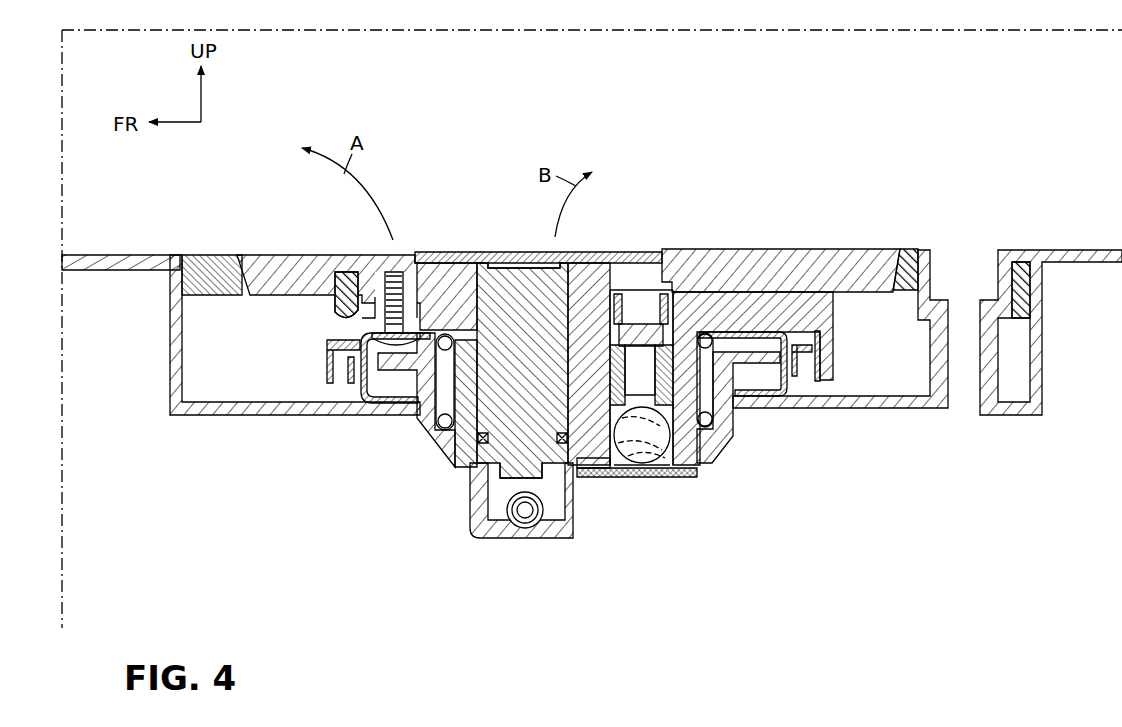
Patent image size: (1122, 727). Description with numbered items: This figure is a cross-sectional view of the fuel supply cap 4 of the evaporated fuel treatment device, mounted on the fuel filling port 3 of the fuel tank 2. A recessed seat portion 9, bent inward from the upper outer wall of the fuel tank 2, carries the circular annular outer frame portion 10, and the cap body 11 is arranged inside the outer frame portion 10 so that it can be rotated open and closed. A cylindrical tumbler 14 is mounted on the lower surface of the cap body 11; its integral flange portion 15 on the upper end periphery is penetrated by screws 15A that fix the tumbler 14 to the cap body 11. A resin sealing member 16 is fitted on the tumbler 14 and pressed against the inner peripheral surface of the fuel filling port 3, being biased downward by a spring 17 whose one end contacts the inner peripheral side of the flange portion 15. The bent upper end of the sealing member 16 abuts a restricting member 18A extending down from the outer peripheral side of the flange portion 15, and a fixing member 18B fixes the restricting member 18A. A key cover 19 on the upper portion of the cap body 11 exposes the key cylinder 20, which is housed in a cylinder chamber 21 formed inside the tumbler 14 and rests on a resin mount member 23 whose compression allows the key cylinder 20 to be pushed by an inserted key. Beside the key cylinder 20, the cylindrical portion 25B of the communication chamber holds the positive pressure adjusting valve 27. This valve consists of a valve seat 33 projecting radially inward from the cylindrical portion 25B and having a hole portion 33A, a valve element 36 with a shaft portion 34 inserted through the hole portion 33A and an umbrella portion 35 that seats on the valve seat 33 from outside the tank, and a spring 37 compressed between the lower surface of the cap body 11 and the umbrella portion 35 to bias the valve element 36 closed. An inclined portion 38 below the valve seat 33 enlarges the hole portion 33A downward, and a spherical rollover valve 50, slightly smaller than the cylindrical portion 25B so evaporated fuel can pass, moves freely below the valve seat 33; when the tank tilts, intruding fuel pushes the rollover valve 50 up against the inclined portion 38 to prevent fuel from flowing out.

The fuel tank 2 is at (127, 255).
The fuel filling port 3 is at (428, 432).
The fuel supply cap 4 is at (742, 246).
The seat portion 9 is at (900, 408).
The outer frame portion 10 is at (918, 250).
The cap body 11 is at (762, 270).
The tumbler 14 is at (597, 470).
The flange portion 15 is at (415, 290).
The screw 15A is at (442, 305).
The sealing member 16 is at (712, 447).
The spring 17 is at (455, 440).
The restricting member 18A is at (748, 396).
The fixing member 18B is at (813, 398).
The key cover 19 is at (508, 252).
The key cylinder 20 is at (525, 512).
The cylinder chamber 21 is at (498, 462).
The mount member 23 is at (487, 452).
The cylindrical portion 25B is at (622, 470).
The positive pressure adjusting valve 27 is at (644, 305).
The valve seat 33 is at (612, 362).
The hole portion 33A is at (652, 470).
The shaft portion 34 is at (717, 462).
The umbrella portion 35 is at (640, 325).
The valve element 36 is at (716, 323).
The spring 37 is at (651, 303).
The inclined portion 38 is at (636, 420).
The rollover valve 50 is at (672, 473).